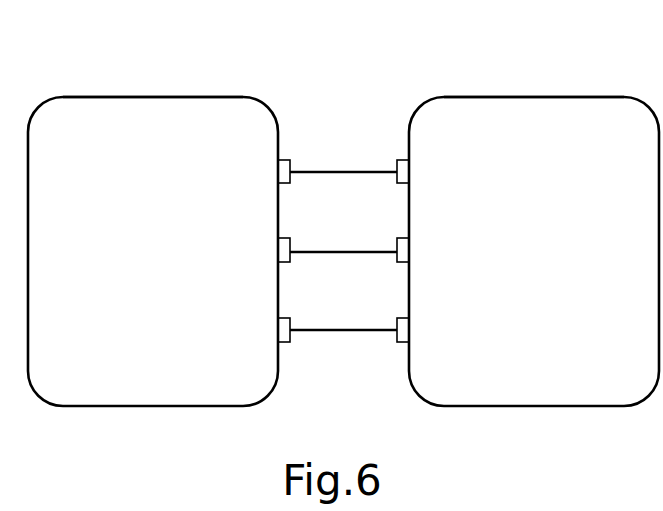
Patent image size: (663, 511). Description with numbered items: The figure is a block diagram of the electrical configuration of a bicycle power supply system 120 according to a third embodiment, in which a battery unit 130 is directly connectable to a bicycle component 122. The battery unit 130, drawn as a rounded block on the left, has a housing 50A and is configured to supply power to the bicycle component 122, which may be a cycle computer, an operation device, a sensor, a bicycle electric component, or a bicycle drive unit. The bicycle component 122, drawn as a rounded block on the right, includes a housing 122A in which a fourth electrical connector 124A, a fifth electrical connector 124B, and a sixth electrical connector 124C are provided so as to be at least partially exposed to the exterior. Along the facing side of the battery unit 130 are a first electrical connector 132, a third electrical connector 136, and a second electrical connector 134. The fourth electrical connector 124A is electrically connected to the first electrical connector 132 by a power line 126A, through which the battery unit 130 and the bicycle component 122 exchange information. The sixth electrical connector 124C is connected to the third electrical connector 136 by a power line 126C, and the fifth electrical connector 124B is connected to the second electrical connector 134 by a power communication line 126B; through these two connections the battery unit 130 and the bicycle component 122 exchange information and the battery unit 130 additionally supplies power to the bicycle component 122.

The bicycle power supply system 120 is at (455, 70).
The bicycle component 122 is at (603, 96).
The housing 122A is at (533, 96).
The fourth electrical connector 124A is at (402, 160).
The fifth electrical connector 124B is at (402, 342).
The sixth electrical connector 124C is at (402, 262).
The power line 126A is at (343, 170).
The power communication line 126B is at (337, 332).
The power line 126C is at (342, 250).
The battery unit 130 is at (93, 70).
The housing 50A is at (153, 97).
The first electrical connector 132 is at (285, 160).
The second electrical connector 134 is at (283, 342).
The third electrical connector 136 is at (283, 262).